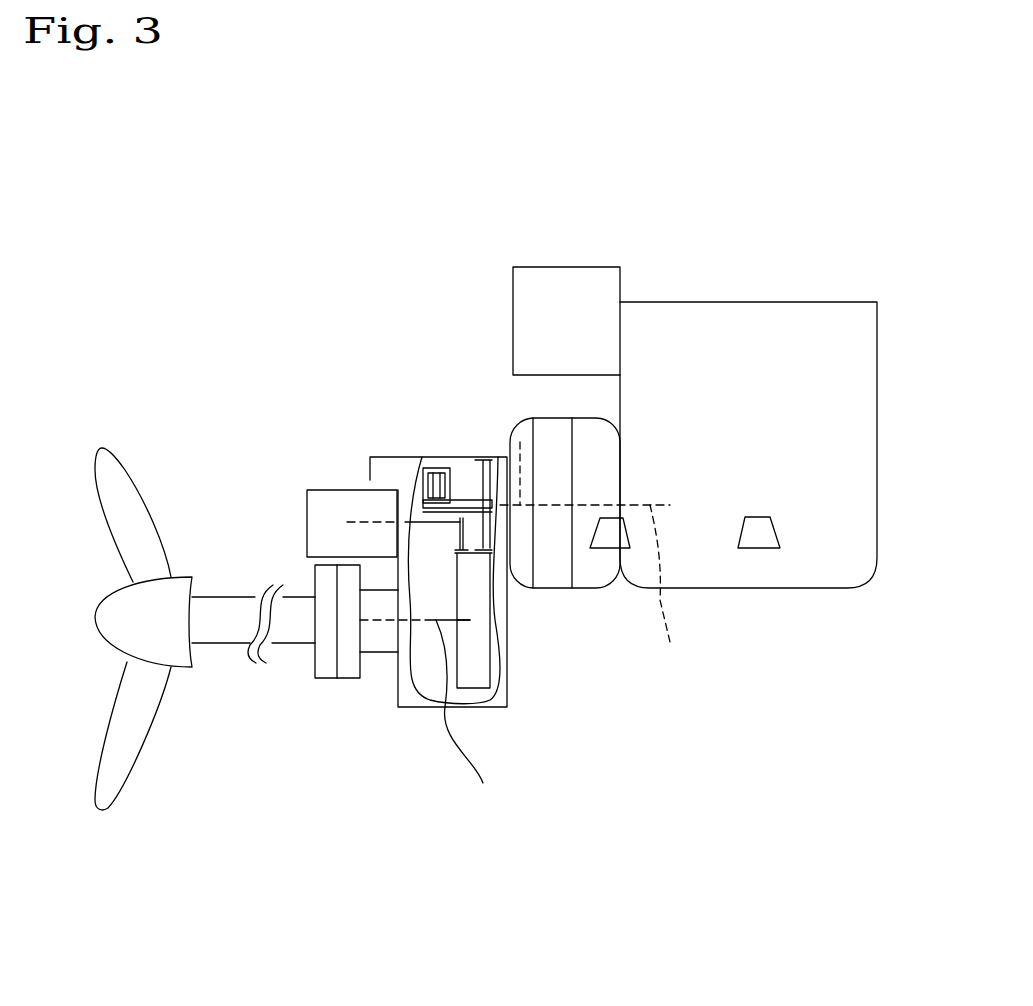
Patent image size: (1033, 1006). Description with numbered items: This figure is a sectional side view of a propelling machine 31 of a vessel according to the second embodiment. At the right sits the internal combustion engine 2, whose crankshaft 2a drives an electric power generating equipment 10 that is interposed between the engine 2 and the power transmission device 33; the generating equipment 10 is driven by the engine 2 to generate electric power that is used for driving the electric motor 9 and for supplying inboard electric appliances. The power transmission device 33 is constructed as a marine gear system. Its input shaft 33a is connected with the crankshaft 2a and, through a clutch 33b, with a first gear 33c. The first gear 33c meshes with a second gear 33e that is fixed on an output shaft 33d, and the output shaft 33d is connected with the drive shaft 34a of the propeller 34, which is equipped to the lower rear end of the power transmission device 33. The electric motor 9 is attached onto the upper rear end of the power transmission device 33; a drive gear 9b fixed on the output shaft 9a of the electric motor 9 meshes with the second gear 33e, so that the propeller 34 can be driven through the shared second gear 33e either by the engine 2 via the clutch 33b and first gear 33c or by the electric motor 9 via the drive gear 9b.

The internal combustion engine 2 is at (748, 439).
The crankshaft 2a is at (676, 588).
The electric motor 9 is at (306, 520).
The output shaft 9a is at (352, 519).
The drive gear 9b is at (458, 537).
The electric power generating equipment 10 is at (555, 576).
The propelling machine 31 is at (231, 339).
The power transmission device 33 is at (409, 712).
The input shaft 33a is at (518, 441).
The clutch 33b is at (438, 467).
The first gear 33c is at (476, 470).
The output shaft 33d is at (474, 719).
The second gear 33e is at (490, 702).
The propeller 34 is at (172, 728).
The drive shaft 34a is at (224, 636).